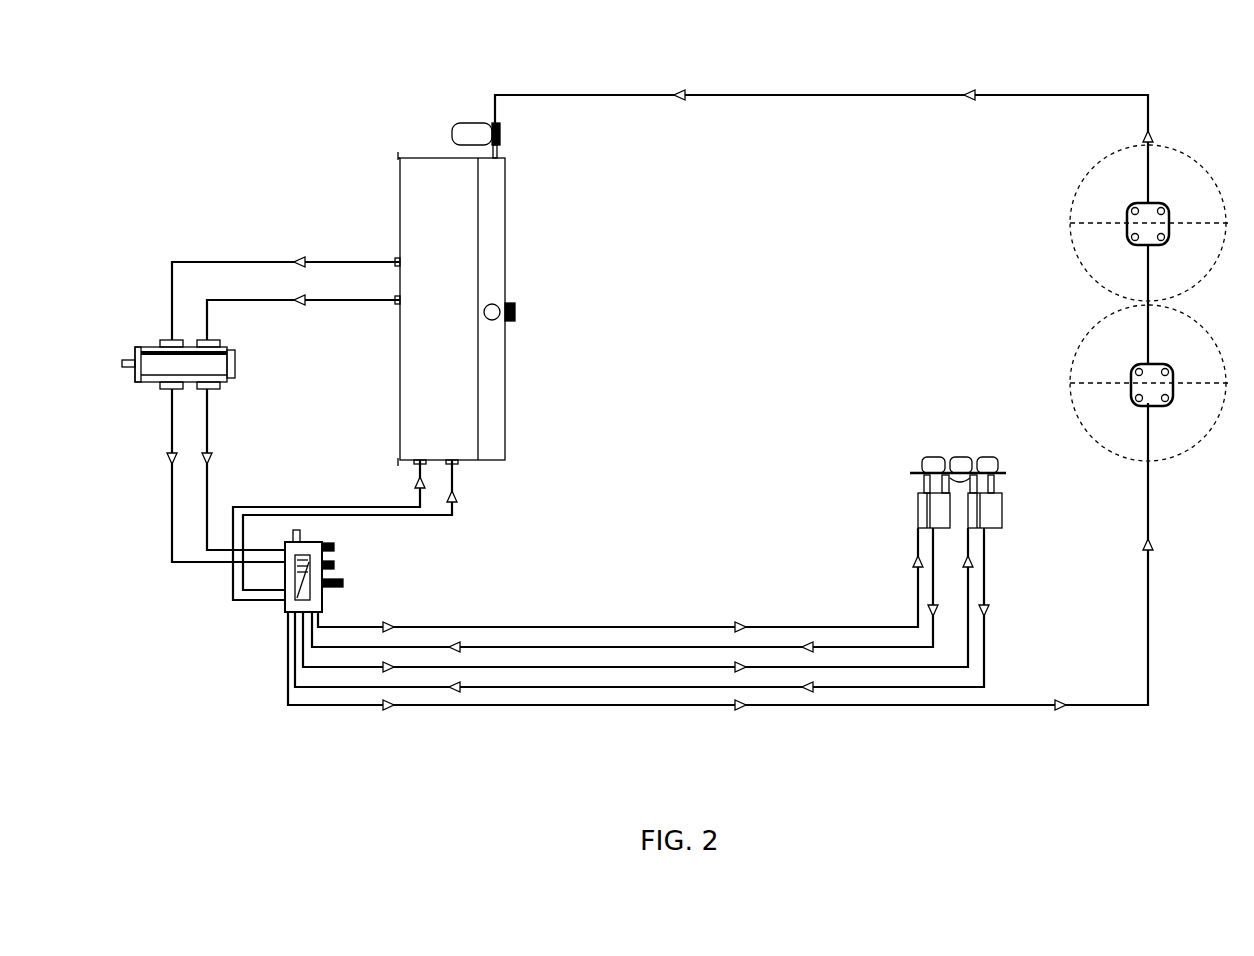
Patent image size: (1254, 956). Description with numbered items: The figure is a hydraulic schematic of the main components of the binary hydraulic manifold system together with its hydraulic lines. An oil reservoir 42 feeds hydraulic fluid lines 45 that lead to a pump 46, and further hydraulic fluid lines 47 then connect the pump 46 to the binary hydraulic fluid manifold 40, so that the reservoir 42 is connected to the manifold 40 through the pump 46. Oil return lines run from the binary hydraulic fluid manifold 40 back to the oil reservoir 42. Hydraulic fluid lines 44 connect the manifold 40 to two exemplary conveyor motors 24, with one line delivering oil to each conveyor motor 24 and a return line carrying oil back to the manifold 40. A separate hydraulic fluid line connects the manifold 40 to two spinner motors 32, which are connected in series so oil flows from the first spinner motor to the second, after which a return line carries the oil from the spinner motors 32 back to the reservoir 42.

The oil reservoir 42 is at (510, 273).
The hydraulic fluid lines 45 is at (234, 295).
The pump 46 is at (230, 366).
The hydraulic fluid lines 47 is at (205, 503).
The binary hydraulic fluid manifold 40 is at (282, 611).
The hydraulic fluid lines 44 is at (642, 644).
The conveyor motors 24 is at (914, 476).
The spinner motors 32 is at (1118, 356).